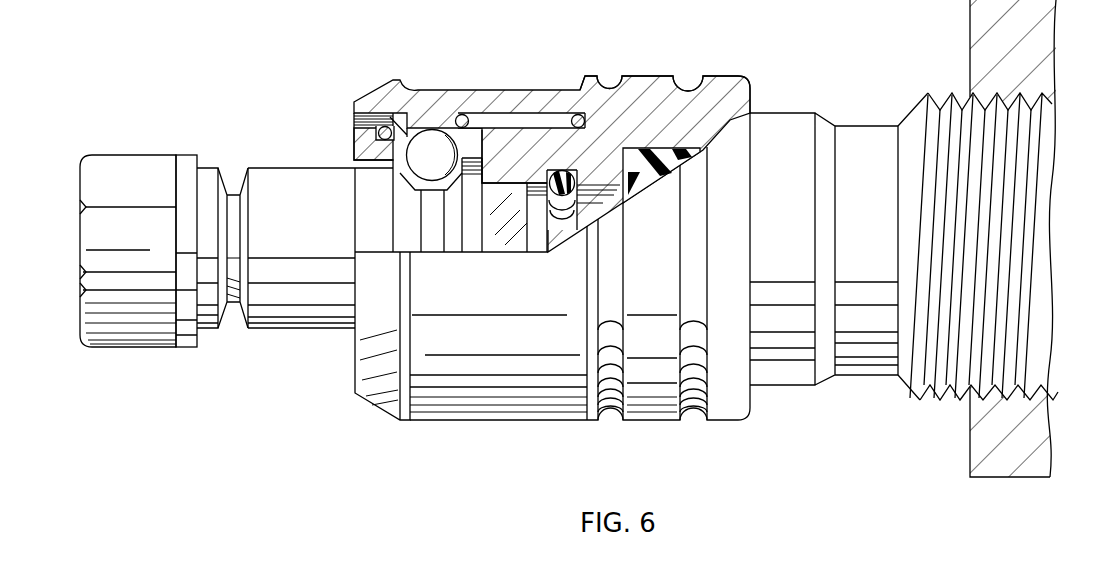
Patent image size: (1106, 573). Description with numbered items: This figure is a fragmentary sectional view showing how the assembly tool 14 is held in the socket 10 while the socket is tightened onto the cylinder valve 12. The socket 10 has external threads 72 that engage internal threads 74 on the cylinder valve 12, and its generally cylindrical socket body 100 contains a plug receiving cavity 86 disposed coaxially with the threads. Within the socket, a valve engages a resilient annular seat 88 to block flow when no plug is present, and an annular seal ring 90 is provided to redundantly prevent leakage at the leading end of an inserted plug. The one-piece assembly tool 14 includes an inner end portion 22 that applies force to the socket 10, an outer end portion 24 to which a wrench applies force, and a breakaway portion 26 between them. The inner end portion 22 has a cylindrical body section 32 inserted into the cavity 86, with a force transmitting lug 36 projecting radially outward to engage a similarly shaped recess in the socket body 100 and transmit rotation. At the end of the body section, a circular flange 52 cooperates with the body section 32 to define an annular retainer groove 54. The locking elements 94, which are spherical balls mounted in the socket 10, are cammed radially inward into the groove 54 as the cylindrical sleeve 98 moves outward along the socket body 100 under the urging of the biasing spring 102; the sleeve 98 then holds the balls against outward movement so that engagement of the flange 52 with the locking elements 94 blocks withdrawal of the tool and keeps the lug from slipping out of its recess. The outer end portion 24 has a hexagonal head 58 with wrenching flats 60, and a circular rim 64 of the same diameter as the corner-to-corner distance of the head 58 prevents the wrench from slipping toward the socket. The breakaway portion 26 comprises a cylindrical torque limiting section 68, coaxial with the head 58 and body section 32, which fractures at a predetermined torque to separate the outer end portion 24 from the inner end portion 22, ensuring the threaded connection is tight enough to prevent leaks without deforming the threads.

The socket 10 is at (528, 440).
The cylinder valve 12 is at (962, 456).
The assembly tool 14 is at (245, 345).
The inner end portion 22 is at (330, 335).
The outer end portion 24 is at (140, 350).
The breakaway portion 26 is at (233, 150).
The cylindrical body section 32 is at (300, 305).
The force transmitting lug 36 is at (367, 160).
The circular flange 52 is at (470, 232).
The annular retainer groove 54 is at (432, 232).
The hexagonal head 58 is at (80, 243).
The wrenching flats 60 is at (140, 172).
The circular rim 64 is at (183, 347).
The cylindrical torque limiting section 68 is at (237, 228).
The external threads 72 is at (927, 97).
The internal threads 74 is at (1005, 100).
The plug receiving cavity 86 is at (500, 232).
The resilient annular seat 88 is at (645, 177).
The annular seal ring 90 is at (560, 232).
The locking elements 94 is at (432, 152).
The cylindrical sleeve 98 is at (553, 103).
The socket body 100 is at (663, 130).
The biasing spring 102 is at (458, 118).